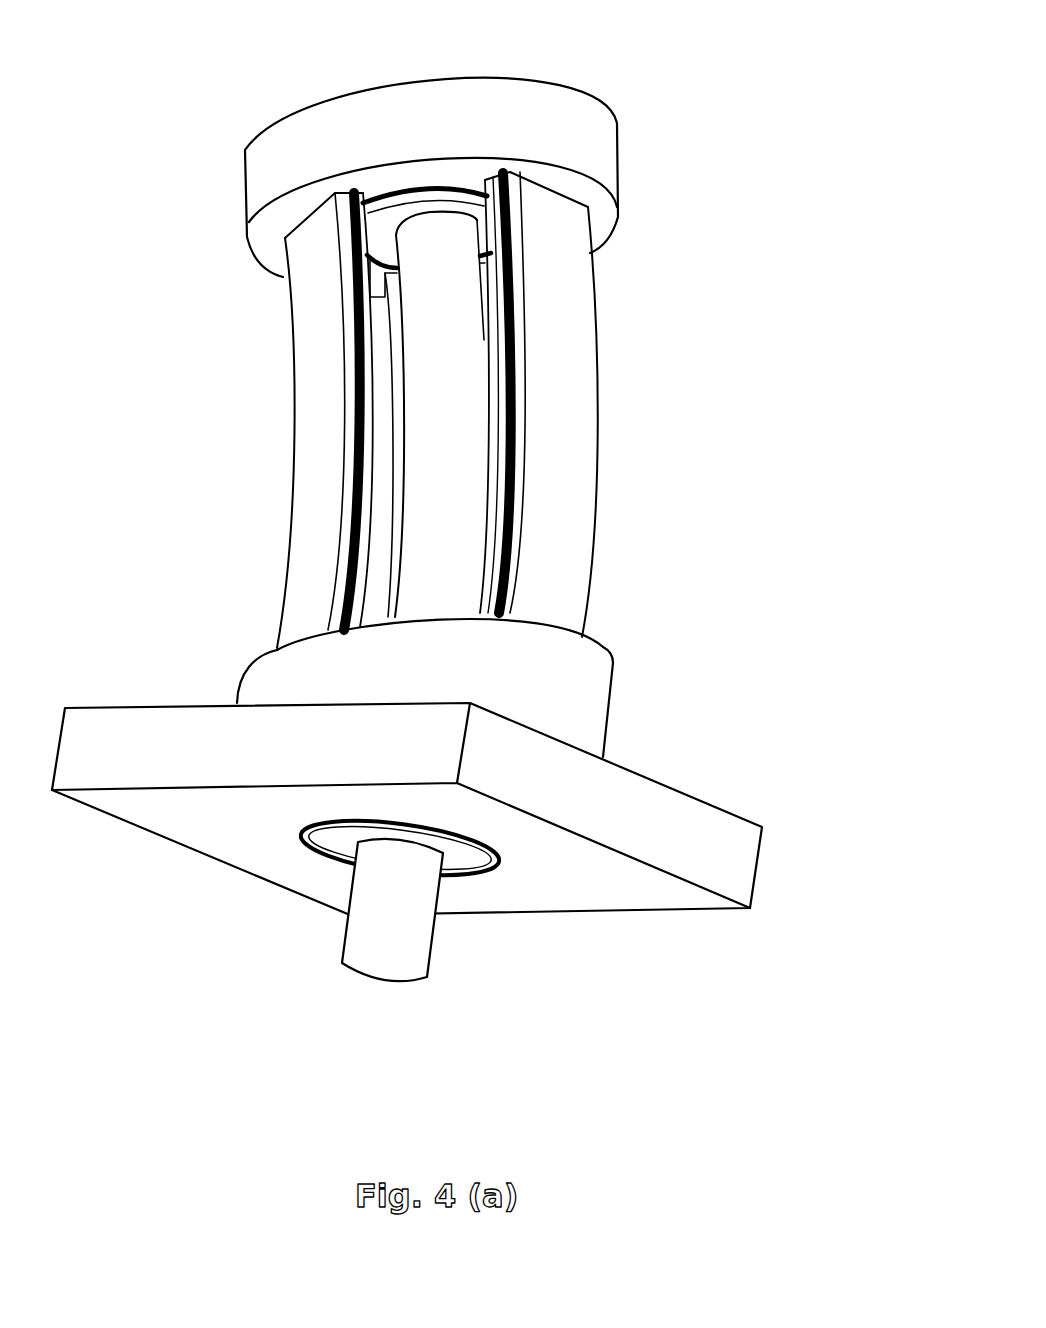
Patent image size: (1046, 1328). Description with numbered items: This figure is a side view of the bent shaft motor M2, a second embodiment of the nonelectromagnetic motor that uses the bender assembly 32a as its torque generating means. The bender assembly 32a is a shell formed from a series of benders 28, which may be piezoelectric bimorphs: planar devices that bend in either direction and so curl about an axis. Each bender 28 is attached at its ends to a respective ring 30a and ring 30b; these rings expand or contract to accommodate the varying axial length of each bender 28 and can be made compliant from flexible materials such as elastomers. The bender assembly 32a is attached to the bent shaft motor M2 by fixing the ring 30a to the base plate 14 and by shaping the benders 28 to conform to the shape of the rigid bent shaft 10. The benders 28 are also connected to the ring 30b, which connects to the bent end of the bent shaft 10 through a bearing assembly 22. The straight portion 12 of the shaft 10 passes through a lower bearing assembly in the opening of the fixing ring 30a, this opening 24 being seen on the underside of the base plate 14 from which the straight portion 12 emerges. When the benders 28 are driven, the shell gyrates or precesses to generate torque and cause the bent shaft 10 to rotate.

The bent shaft 10 is at (467, 473).
The straight portion 12 is at (430, 950).
The base plate 14 is at (98, 705).
The bearing assembly 22 is at (377, 215).
The bearing hole 24 is at (335, 843).
The benders 28 is at (293, 398).
The upper ring 30a is at (615, 680).
The lower ring 30b is at (590, 100).
The bender assembly 32a is at (640, 276).
The bent shaft motor M2 is at (815, 354).